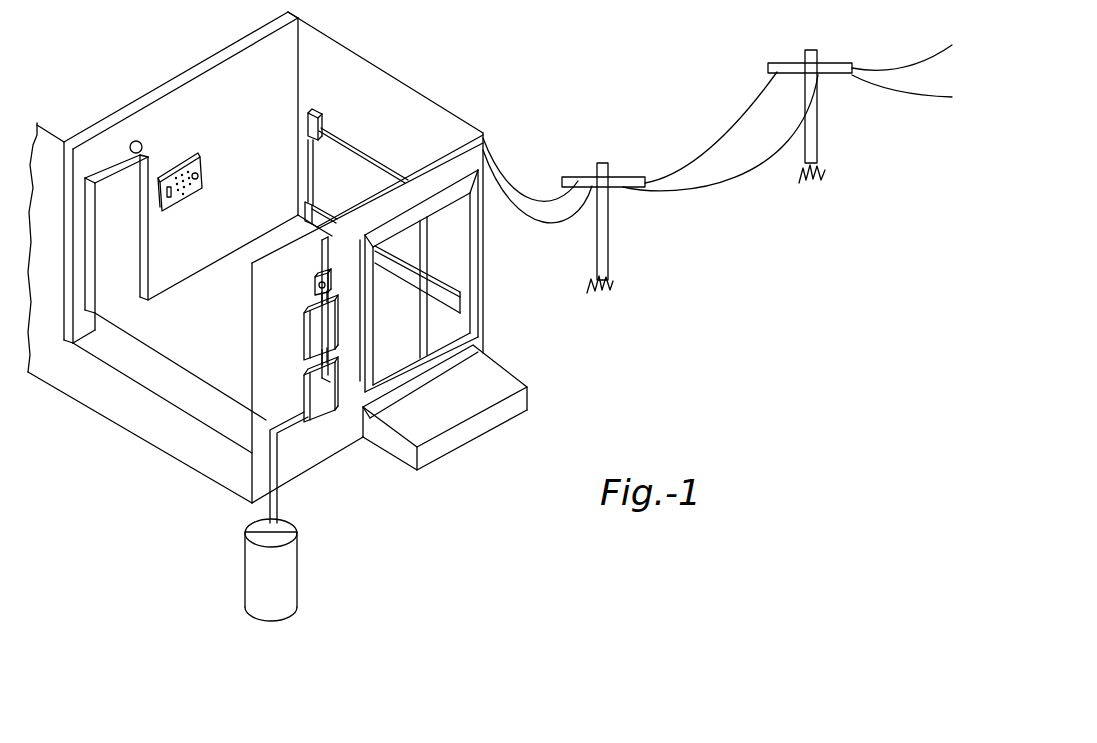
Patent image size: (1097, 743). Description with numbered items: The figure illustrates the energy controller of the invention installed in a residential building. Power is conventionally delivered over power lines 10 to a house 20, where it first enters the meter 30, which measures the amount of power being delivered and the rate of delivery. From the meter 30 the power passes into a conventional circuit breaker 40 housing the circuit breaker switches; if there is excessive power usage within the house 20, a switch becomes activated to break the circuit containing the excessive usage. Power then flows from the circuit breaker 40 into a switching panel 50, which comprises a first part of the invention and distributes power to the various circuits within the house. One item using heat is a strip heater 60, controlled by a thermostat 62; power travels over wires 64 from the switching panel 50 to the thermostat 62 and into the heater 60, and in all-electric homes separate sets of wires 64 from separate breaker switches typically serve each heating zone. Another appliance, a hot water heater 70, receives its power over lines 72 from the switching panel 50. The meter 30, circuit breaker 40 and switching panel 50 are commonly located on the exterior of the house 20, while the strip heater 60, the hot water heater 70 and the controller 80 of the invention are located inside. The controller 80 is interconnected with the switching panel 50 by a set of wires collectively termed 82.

The power lines 10 is at (710, 186).
The house 20 is at (470, 57).
The meter 30 is at (330, 283).
The circuit breaker 40 is at (304, 345).
The switching panel 50 is at (315, 393).
The strip heater 60 is at (360, 184).
The thermostat 62 is at (311, 111).
The wires 64 is at (360, 382).
The hot water heater 70 is at (297, 583).
The lines 72 is at (288, 426).
The controller 80 is at (178, 158).
The set of wires 82 is at (137, 141).